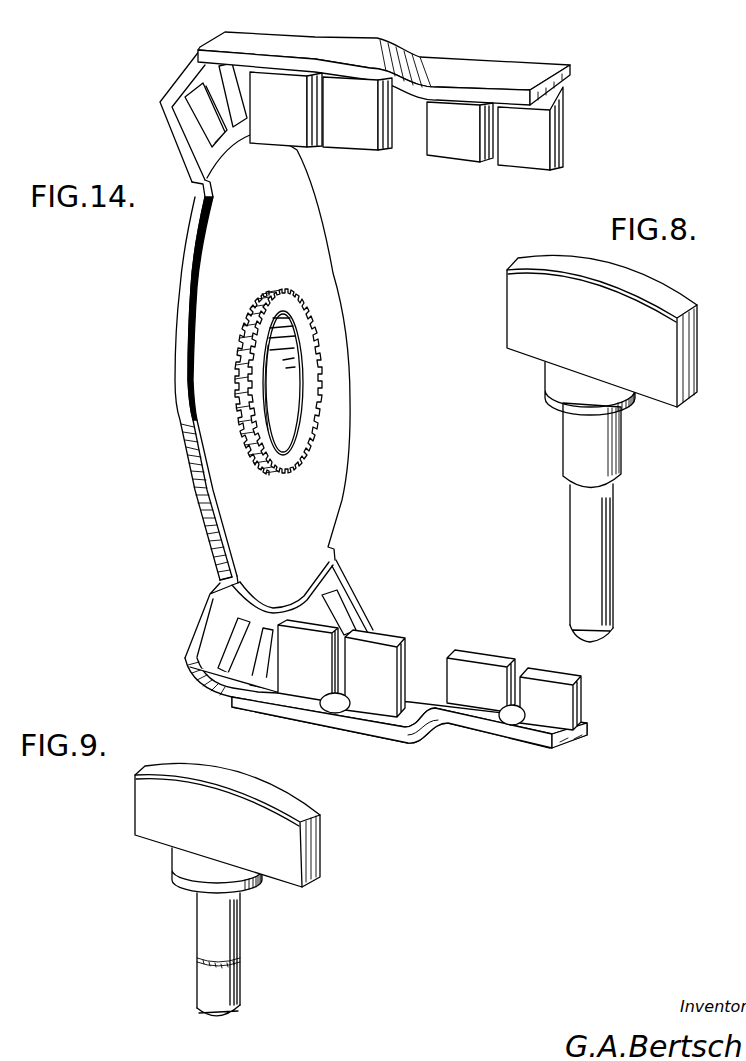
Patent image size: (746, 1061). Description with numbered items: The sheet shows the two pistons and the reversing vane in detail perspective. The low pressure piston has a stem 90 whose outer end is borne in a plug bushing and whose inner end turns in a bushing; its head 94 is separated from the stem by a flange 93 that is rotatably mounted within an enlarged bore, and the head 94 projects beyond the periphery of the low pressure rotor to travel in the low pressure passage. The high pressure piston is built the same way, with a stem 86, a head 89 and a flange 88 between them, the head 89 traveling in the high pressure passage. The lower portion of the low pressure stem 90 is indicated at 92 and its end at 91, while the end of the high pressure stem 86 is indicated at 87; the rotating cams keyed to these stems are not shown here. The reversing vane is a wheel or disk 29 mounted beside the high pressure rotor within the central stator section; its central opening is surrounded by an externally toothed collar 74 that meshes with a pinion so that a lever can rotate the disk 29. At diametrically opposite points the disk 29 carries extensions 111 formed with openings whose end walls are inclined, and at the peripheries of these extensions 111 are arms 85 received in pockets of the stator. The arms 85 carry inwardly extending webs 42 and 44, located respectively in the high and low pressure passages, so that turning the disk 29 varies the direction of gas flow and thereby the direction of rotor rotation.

In FIG. 14, the wheel or disk 29 is at (312, 276).
In FIG. 14, the externally toothed collar 74 is at (320, 396).
In FIG. 14, the extensions 111 is at (195, 130).
In FIG. 14, the arms 85 is at (383, 49).
In FIG. 14, the inwardly extending web 44 is at (355, 133).
In FIG. 14, the inwardly extending web 42 is at (525, 152).
In FIG. 8, the head 94 is at (512, 308).
In FIG. 8, the flange 93 is at (547, 391).
In FIG. 8, the shaft 92 is at (608, 456).
In FIG. 8, the stem 90 is at (600, 566).
In FIG. 8, the tip 91 is at (600, 638).
In FIG. 9, the head 89 is at (135, 807).
In FIG. 9, the flange 88 is at (245, 892).
In FIG. 9, the stem 86 is at (200, 985).
In FIG. 9, the tip 87 is at (208, 1019).